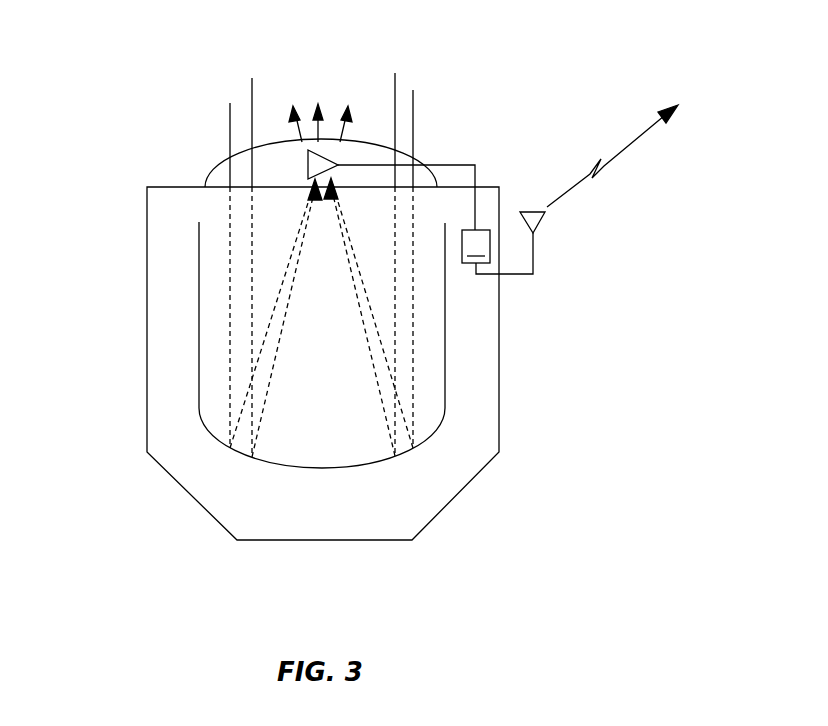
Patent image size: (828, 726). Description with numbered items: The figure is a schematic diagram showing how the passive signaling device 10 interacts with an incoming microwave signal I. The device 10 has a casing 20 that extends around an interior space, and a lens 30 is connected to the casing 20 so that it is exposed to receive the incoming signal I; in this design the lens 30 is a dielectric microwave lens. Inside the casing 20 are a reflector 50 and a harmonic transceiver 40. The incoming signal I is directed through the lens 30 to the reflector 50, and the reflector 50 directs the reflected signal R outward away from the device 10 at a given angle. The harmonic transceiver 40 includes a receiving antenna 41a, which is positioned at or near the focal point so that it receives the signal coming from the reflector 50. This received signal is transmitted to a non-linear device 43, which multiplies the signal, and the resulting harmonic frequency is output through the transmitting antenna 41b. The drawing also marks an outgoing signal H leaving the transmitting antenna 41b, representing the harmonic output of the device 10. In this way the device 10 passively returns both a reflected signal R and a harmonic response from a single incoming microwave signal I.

The signaling device 10 is at (371, 328).
The casing 20 is at (147, 295).
The lens 30 is at (212, 168).
The harmonic transceiver 40 is at (374, 189).
The receiving antenna 41a is at (308, 167).
The transmitting antenna 41b is at (542, 218).
The non-linear device 43 is at (497, 252).
The reflector 50 is at (382, 463).
The incoming microwave signal I is at (230, 108).
The reflected signal R is at (299, 130).
The wireless signal H is at (623, 152).